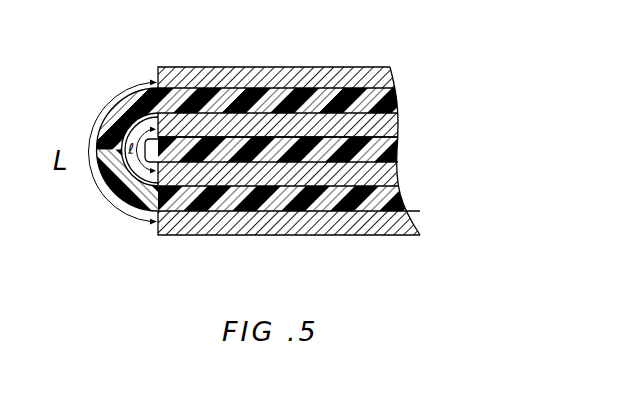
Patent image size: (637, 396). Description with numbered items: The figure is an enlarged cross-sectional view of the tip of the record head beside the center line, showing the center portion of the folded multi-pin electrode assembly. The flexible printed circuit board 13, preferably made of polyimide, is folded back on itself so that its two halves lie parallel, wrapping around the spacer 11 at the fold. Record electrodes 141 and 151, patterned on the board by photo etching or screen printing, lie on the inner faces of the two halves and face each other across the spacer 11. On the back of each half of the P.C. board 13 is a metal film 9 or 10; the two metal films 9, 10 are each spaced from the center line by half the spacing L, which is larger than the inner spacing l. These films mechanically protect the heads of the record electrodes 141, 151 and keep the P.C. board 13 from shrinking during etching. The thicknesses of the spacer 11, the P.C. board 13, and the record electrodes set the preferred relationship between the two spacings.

The metal film 9 is at (391, 79).
The printed circuit board 13 is at (395, 105).
The record electrode 141 is at (398, 128).
The spacer 11 is at (397, 155).
The record electrode 151 is at (397, 171).
The metal film 10 is at (420, 230).